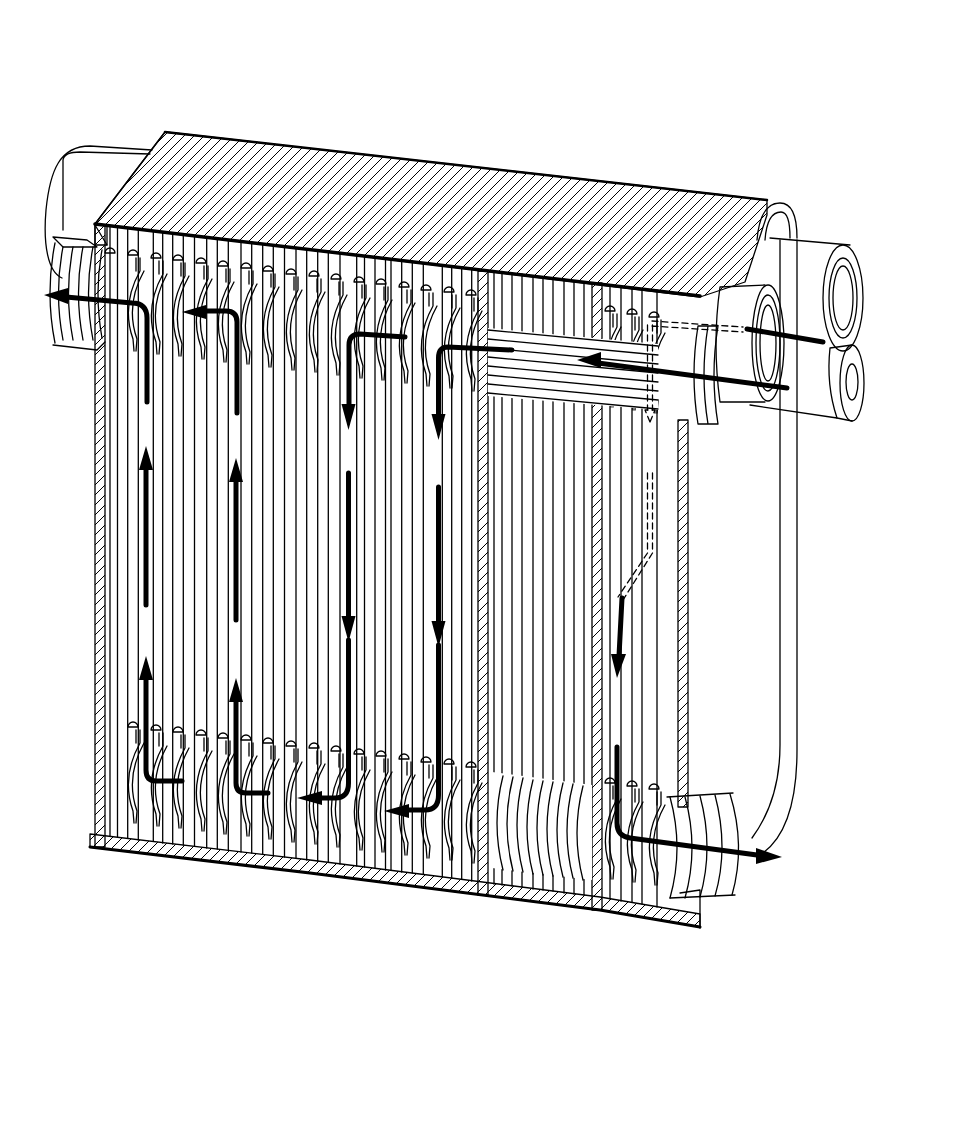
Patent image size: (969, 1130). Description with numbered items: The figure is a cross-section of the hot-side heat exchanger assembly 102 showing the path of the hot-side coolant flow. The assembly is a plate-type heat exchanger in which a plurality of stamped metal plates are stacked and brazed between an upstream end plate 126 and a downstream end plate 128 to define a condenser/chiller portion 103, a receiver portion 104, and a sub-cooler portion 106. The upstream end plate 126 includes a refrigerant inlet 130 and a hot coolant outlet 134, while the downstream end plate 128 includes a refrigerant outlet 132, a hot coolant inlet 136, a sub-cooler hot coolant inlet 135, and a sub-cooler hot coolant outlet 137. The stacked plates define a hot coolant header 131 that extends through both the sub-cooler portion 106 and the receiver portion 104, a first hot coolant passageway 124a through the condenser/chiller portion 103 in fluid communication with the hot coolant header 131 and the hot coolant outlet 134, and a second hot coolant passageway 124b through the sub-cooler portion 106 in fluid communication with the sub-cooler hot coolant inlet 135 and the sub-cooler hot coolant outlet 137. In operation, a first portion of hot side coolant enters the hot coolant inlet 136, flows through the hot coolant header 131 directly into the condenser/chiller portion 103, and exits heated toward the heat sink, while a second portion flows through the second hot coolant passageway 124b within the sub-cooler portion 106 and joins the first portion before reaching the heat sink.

The hot-side heat exchanger assembly 102 is at (566, 116).
The condenser/chiller portion 103 is at (94, 850).
The receiver portion 104 is at (485, 900).
The sub-cooler portion 106 is at (597, 913).
The first hot coolant passageway 124a is at (133, 720).
The second hot coolant passageway 124b is at (620, 628).
The upstream end plate 126 is at (168, 130).
The downstream end plate 128 is at (807, 470).
The refrigerant inlet 130 is at (107, 158).
The hot coolant header 131 is at (570, 355).
The refrigerant outlet 132 is at (853, 250).
The hot coolant outlet 134 is at (72, 280).
The sub-cooler hot coolant inlet 135 is at (762, 285).
The hot coolant inlet 136 is at (693, 298).
The sub-cooler hot coolant outlet 137 is at (718, 893).